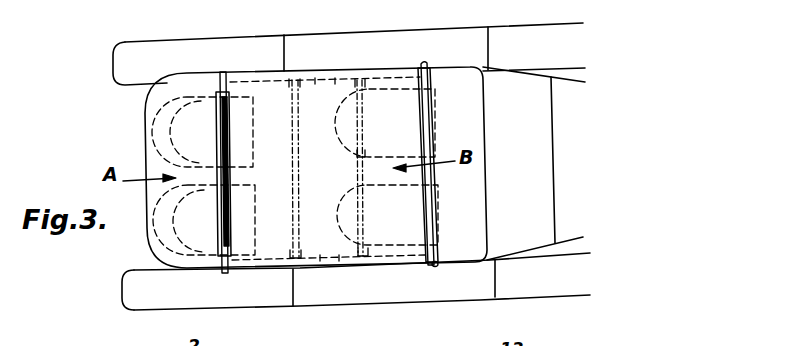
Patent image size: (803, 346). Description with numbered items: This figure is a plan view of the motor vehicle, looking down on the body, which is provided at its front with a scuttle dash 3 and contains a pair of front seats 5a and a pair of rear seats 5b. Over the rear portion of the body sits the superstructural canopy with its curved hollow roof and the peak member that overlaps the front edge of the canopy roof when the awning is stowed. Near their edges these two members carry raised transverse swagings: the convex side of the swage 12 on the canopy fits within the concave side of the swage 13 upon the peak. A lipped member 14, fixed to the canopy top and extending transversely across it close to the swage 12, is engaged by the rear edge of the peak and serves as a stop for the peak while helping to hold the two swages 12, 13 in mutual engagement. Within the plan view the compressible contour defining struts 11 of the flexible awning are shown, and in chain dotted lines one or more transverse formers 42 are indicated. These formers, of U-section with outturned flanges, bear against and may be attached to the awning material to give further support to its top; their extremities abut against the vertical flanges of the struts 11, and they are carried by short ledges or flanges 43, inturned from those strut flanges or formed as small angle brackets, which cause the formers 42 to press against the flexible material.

The scuttle dash 3 is at (548, 168).
The front seats 5a is at (353, 156).
The rear seats 5b is at (249, 187).
The compressible contour defining struts 11 is at (340, 79).
The swage on the canopy 12 is at (230, 202).
The swage upon the peak 13 is at (437, 266).
The lipped member 14 is at (218, 212).
The transverse formers 42 is at (357, 125).
The short ledges or flanges 43 is at (289, 84).